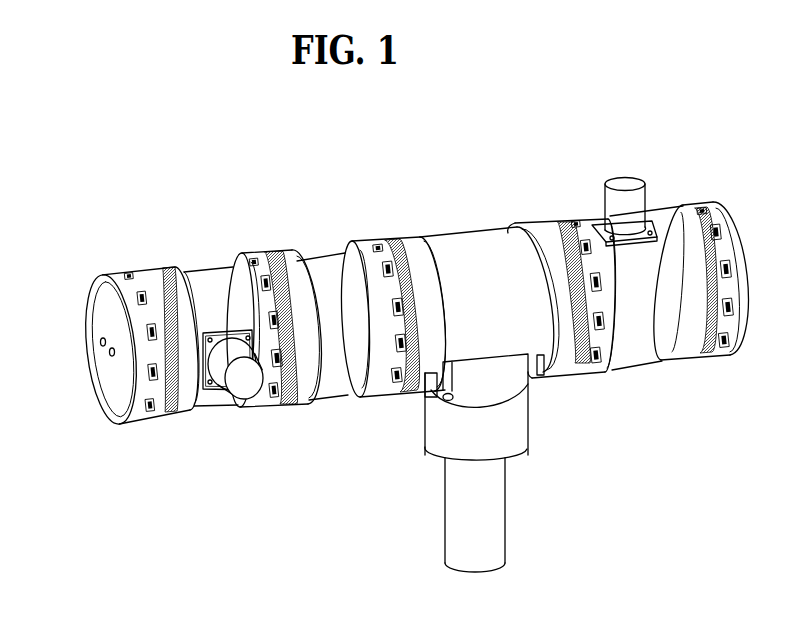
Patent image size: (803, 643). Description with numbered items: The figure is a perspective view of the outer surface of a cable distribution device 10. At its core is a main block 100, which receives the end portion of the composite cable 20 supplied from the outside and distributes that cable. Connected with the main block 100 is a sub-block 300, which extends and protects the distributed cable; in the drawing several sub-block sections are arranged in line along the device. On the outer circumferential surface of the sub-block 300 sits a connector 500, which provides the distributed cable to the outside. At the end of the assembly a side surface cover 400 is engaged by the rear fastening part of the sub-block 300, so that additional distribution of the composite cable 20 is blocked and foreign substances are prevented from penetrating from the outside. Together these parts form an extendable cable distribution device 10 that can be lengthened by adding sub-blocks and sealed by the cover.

The cable distribution device 10 is at (65, 188).
The composite cable 20 is at (492, 512).
The main block 100 is at (472, 262).
The sub-block 300 is at (200, 268).
The side surface cover 400 is at (110, 390).
The connector 500 is at (238, 388).